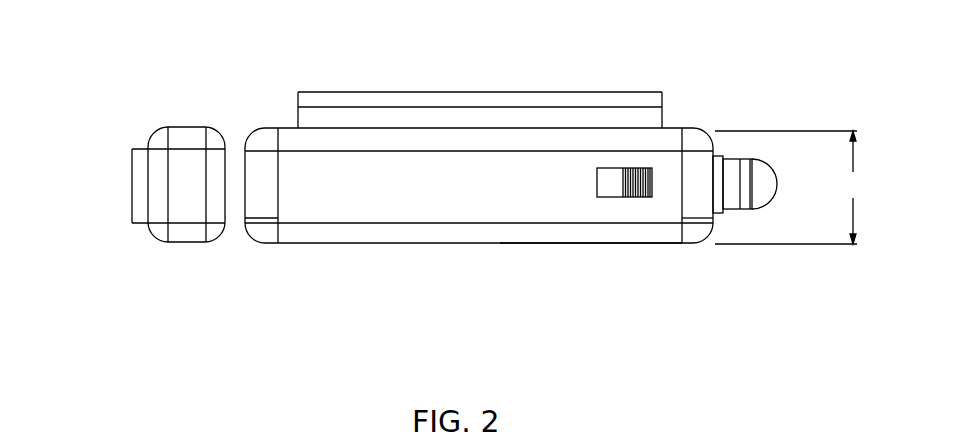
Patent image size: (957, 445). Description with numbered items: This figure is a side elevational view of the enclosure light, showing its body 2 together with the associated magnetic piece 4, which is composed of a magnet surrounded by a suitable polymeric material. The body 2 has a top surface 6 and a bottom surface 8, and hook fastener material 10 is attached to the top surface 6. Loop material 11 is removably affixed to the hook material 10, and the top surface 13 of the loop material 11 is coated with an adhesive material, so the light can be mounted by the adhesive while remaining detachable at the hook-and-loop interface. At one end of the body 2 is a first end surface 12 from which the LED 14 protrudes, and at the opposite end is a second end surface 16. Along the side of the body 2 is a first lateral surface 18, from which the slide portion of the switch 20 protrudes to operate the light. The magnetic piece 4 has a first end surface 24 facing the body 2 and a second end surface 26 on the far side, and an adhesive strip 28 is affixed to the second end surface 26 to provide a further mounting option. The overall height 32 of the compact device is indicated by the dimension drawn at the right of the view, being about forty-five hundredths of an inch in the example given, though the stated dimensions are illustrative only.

The body 2 is at (457, 187).
The magnetic piece 4 is at (190, 233).
The top surface 6 is at (667, 130).
The bottom surface 8 is at (577, 245).
The hook fastener material 10 is at (312, 118).
The loop material 11 is at (632, 102).
The first end surface 12 is at (717, 217).
The top surface 13 is at (557, 90).
The LED 14 is at (762, 182).
The second end surface 16 is at (243, 160).
The first lateral surface 18 is at (532, 203).
The switch 20 is at (637, 187).
The first end surface 24 is at (227, 213).
The second end surface 26 is at (147, 208).
The adhesive strip 28 is at (140, 163).
The height 32 is at (790, 187).